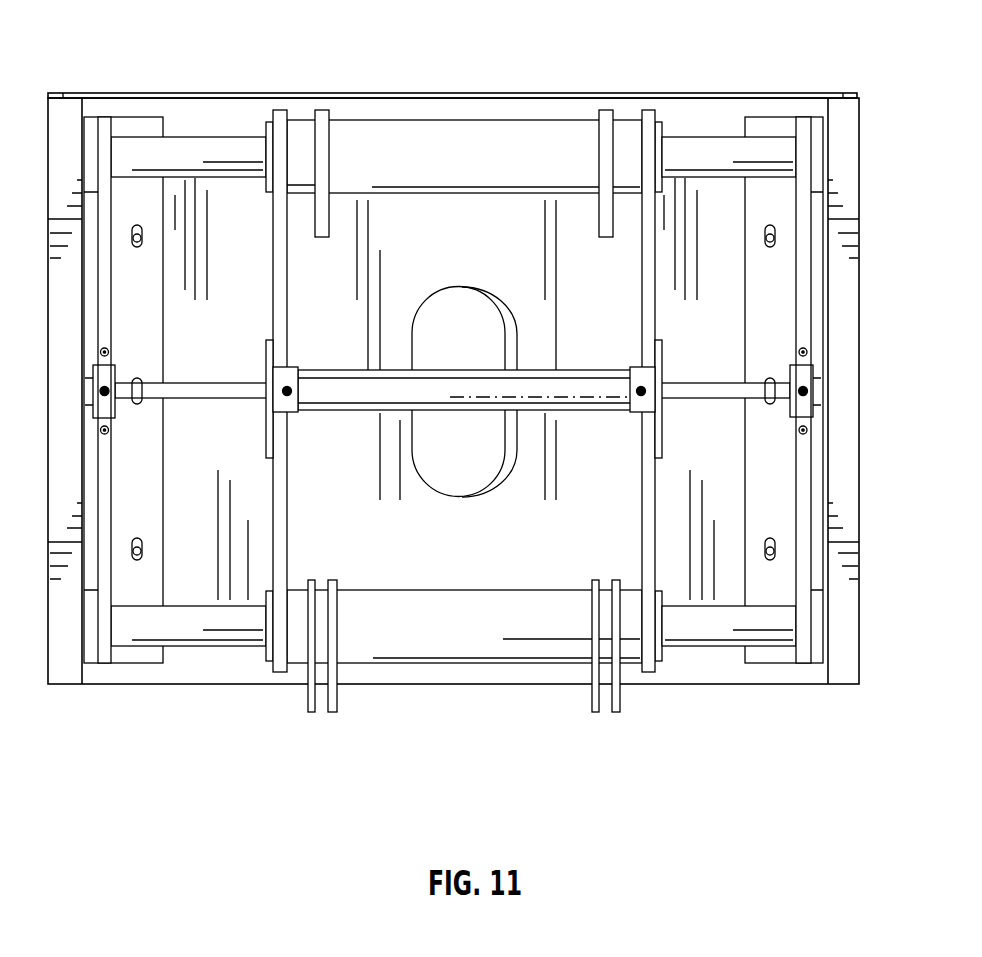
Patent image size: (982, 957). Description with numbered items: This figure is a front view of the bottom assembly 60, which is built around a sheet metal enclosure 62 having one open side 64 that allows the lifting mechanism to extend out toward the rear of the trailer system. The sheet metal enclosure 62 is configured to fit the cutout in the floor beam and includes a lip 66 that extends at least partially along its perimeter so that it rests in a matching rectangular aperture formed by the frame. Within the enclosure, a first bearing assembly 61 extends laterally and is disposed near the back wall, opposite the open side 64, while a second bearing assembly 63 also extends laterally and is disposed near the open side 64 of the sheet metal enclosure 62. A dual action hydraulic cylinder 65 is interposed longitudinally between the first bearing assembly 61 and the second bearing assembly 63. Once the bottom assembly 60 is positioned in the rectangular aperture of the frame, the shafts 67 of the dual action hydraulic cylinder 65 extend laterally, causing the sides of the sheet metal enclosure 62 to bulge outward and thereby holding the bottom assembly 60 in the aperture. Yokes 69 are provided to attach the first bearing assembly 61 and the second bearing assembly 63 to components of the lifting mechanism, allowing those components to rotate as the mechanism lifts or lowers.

The bottom assembly 60 is at (331, 86).
The first bearing assembly 61 is at (434, 110).
The sheet metal enclosure 62 is at (49, 90).
The second bearing assembly 63 is at (532, 672).
The open side 64 is at (203, 680).
The dual action hydraulic cylinder 65 is at (350, 422).
The lip 66 is at (842, 325).
The shafts 67 is at (214, 382).
The yokes 69 is at (330, 714).